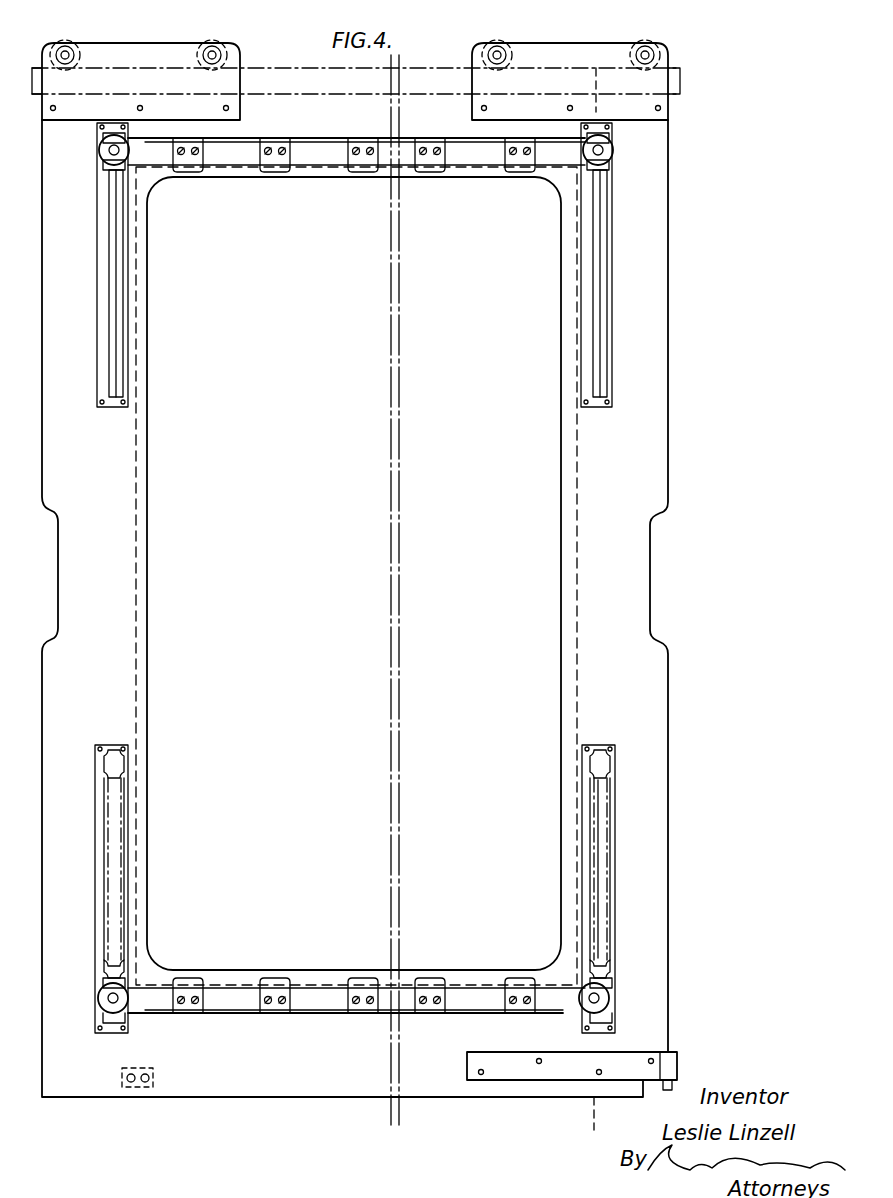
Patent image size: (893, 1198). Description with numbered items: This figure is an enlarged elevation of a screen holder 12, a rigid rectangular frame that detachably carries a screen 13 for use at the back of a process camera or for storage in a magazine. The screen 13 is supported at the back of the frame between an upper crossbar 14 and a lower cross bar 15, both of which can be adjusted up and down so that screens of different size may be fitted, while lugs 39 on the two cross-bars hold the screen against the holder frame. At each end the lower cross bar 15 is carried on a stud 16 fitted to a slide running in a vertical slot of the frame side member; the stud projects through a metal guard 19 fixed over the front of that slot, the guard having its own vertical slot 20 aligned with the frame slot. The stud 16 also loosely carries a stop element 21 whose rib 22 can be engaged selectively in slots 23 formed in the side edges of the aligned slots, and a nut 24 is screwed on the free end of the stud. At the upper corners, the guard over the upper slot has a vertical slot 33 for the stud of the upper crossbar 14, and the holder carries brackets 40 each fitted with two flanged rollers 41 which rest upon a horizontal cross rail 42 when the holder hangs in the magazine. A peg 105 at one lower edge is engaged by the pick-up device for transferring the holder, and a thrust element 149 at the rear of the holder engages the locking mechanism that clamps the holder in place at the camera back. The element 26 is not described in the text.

The screen holder 12 is at (118, 473).
The screen 13 is at (136, 423).
The upper crossbar 14 is at (313, 151).
The lower cross bar 15 is at (315, 1001).
The stud 16 is at (108, 996).
The metal guard 19 is at (125, 795).
The vertical slot 20 is at (113, 762).
The stop element 21 is at (110, 982).
The rib 22 is at (102, 964).
The slots 23 is at (122, 776).
The nut 24 is at (120, 1004).
The rod 26 is at (600, 825).
The vertical slot 33 is at (109, 268).
The lugs 39 is at (272, 175).
The brackets 40 is at (126, 54).
The flanged rollers 41 is at (68, 42).
The horizontal cross rail 42 is at (305, 67).
The peg 105 is at (666, 1092).
The thrust element 149 is at (152, 1070).